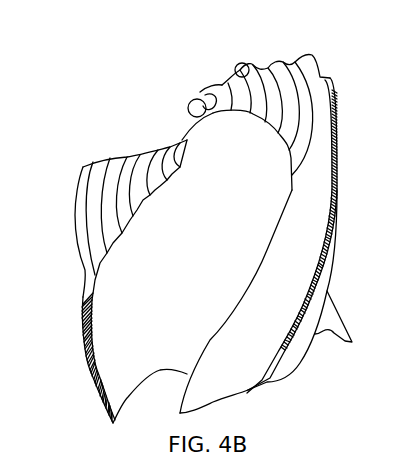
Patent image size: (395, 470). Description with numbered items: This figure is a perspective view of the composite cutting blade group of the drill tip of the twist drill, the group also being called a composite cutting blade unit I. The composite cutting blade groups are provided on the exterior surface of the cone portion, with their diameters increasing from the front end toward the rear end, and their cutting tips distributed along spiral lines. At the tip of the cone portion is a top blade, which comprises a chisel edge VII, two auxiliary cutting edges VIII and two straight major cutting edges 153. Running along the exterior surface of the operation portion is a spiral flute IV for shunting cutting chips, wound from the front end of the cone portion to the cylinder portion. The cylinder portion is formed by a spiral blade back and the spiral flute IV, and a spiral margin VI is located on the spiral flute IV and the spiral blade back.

The straight major cutting edge 153 is at (193, 125).
The composite cutting blade unit I is at (238, 65).
The spiral margin VI is at (86, 291).
The chisel edge VII is at (195, 112).
The auxiliary cutting edge VIII is at (198, 109).
The spiral flute IV is at (172, 284).